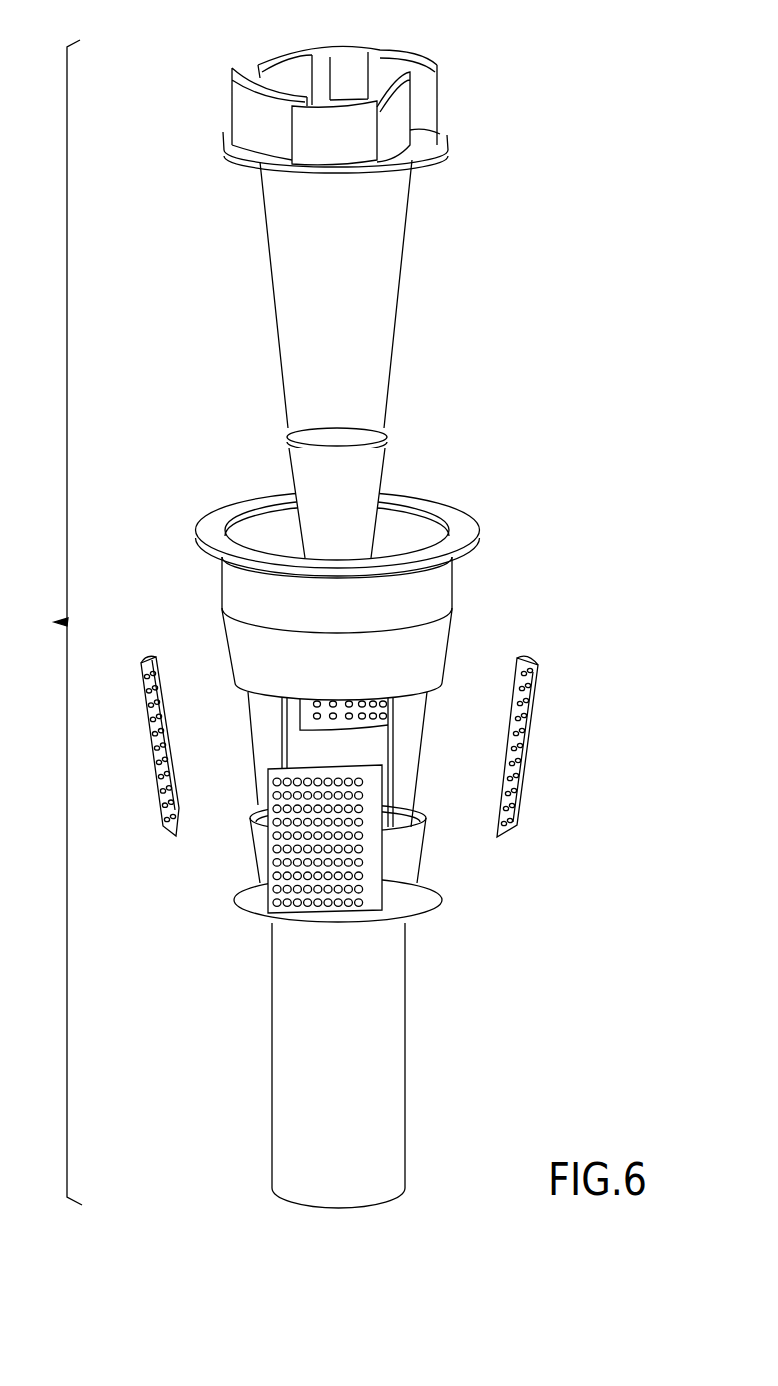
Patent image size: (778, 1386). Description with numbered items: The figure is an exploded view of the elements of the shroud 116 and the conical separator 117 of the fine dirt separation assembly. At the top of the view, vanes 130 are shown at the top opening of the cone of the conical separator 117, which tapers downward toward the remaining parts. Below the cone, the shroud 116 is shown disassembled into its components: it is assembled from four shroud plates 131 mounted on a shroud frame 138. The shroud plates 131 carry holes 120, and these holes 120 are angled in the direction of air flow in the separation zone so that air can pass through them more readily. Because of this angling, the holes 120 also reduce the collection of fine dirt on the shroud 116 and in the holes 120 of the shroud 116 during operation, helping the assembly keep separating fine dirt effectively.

The vanes 130 is at (418, 47).
The conical separator 117 is at (402, 293).
The shroud 116 is at (530, 775).
The shroud plates 131 is at (158, 813).
The shroud frame 138 is at (265, 758).
The holes 120 is at (276, 876).